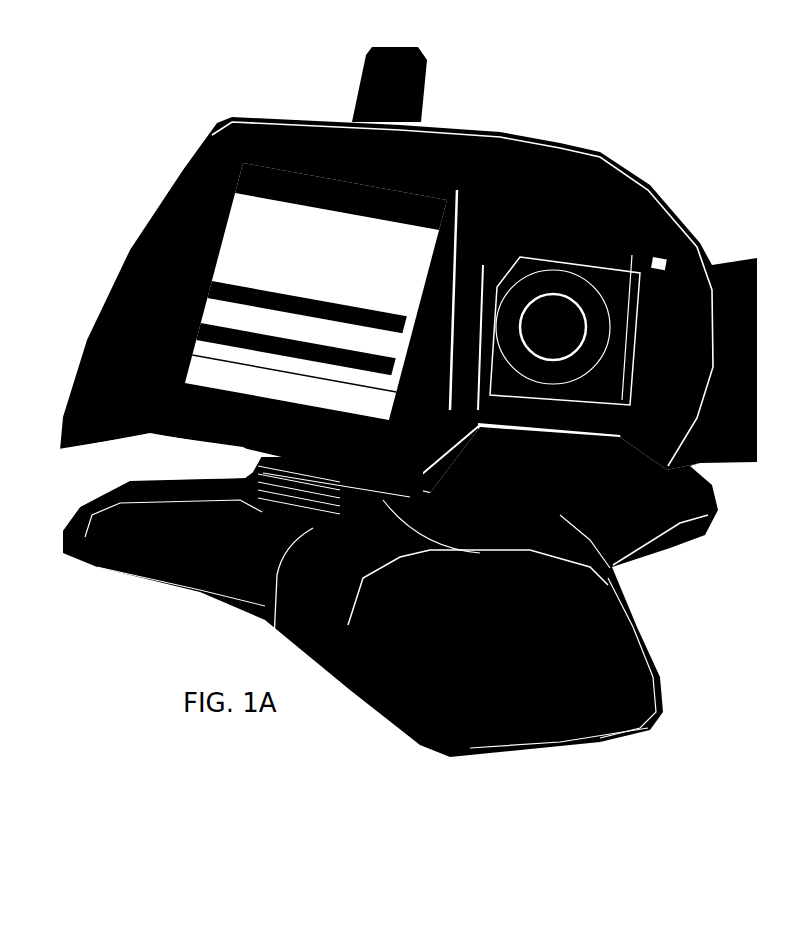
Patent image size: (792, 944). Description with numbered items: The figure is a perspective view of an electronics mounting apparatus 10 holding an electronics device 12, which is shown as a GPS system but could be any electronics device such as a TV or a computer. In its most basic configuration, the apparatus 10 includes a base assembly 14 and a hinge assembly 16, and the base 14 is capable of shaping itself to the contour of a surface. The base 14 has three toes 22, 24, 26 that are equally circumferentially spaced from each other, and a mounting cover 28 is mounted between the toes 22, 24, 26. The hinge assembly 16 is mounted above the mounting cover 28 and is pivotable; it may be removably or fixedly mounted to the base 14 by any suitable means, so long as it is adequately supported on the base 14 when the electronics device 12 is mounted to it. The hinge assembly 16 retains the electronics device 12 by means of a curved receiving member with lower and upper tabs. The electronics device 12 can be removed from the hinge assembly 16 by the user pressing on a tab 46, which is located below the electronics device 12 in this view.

The electronics mounting apparatus 10 is at (398, 426).
The electronics device 12 is at (636, 164).
The base assembly 14 is at (389, 610).
The hinge assembly 16 is at (222, 452).
The toe 22 is at (575, 749).
The toe 24 is at (82, 566).
The toe 26 is at (696, 531).
The mounting cover 28 is at (614, 580).
The tab 46 is at (211, 601).